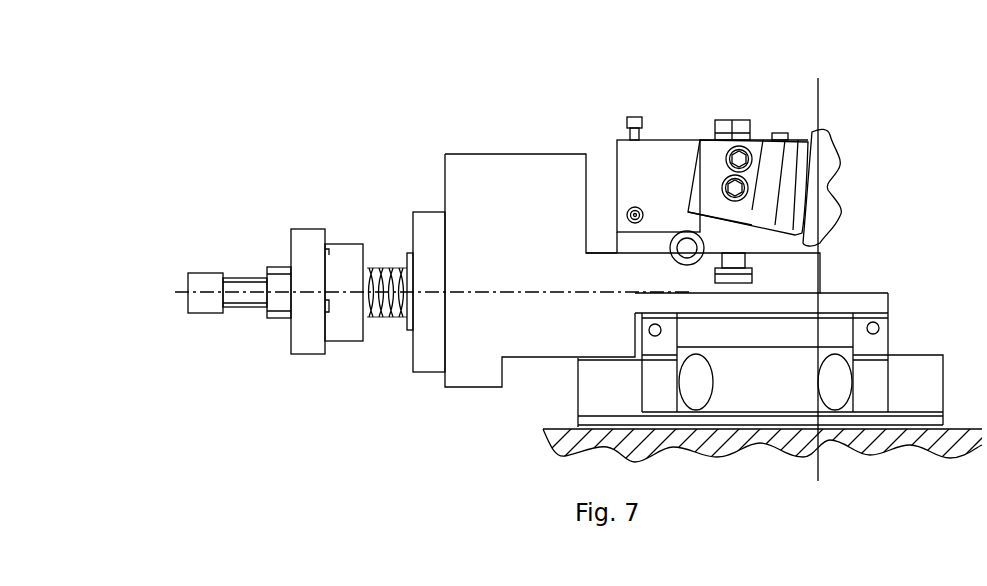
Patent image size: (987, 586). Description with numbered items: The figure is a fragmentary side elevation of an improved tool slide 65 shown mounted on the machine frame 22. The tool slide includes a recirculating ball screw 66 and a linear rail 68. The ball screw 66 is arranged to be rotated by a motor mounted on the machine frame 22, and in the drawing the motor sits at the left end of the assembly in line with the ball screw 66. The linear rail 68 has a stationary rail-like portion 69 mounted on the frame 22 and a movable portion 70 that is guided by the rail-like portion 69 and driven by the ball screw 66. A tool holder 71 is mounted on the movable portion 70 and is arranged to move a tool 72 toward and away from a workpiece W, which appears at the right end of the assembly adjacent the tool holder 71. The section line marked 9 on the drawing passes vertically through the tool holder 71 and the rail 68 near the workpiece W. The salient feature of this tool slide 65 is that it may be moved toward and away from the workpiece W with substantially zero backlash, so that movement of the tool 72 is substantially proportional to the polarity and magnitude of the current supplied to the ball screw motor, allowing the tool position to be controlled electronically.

The tool slide 65 is at (370, 125).
The recirculating ball screw 66 is at (347, 358).
The movable portion 70 is at (552, 332).
The linear rail 68 is at (892, 282).
The stationary rail-like portion 69 is at (907, 355).
The tool holder 71 is at (653, 137).
The tool 72 is at (789, 151).
The workpiece W is at (838, 168).
The section line 9- 9 is at (818, 78).
The machine frame 22 is at (883, 453).